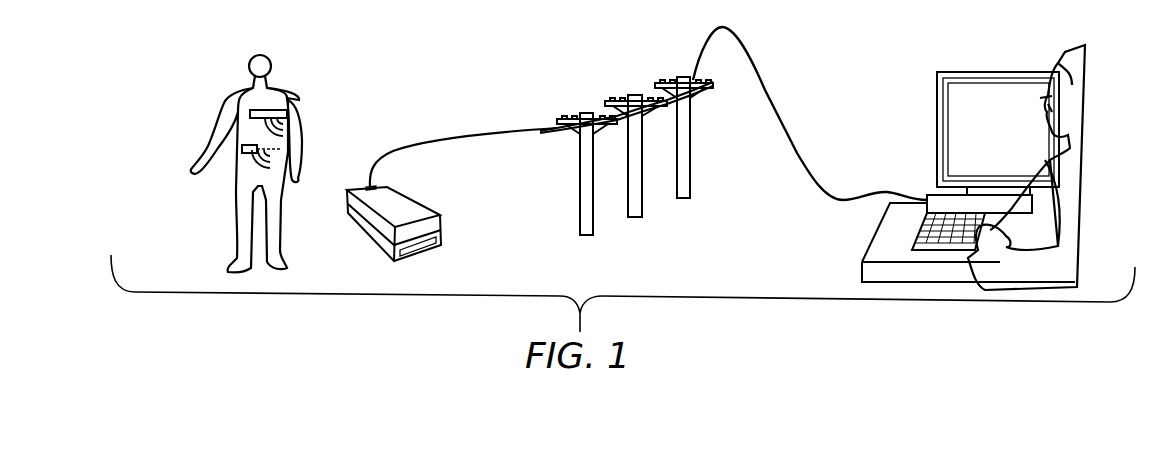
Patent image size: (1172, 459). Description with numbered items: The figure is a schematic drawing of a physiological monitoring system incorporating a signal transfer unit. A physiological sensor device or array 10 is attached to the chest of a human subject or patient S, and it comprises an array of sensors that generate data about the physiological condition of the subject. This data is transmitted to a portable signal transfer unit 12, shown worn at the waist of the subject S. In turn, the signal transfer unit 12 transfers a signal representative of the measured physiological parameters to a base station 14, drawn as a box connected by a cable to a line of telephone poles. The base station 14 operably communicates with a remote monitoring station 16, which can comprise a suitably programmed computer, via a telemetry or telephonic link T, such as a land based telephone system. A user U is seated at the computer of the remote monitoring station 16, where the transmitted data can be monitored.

The physiological sensor device 10 is at (284, 112).
The portable signal transfer unit 12 is at (238, 136).
The base station 14 is at (397, 208).
The remote monitoring station 16 is at (918, 174).
The human subject S is at (245, 200).
The telephonic link T is at (665, 224).
The user U is at (1060, 212).